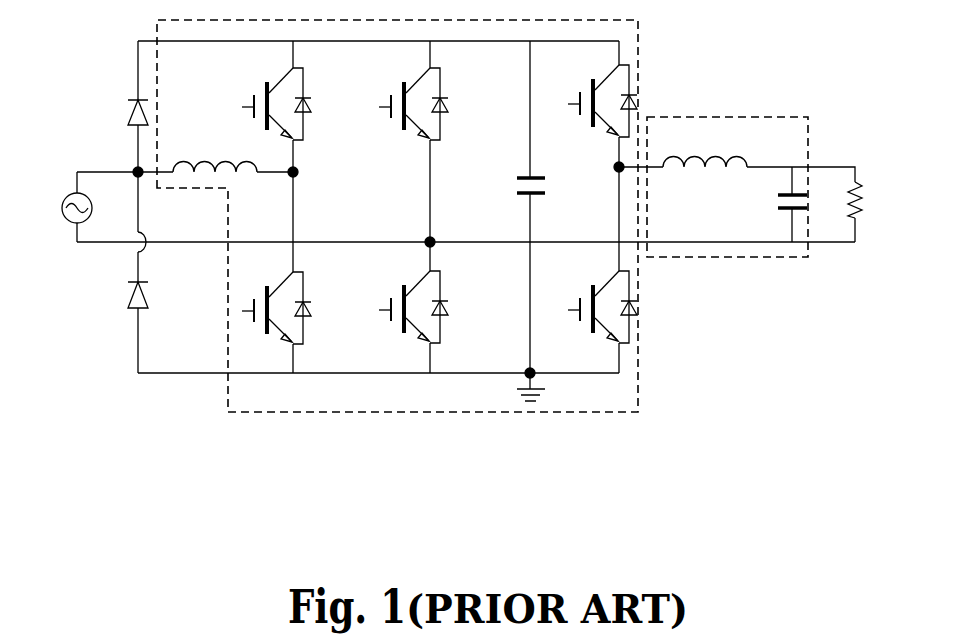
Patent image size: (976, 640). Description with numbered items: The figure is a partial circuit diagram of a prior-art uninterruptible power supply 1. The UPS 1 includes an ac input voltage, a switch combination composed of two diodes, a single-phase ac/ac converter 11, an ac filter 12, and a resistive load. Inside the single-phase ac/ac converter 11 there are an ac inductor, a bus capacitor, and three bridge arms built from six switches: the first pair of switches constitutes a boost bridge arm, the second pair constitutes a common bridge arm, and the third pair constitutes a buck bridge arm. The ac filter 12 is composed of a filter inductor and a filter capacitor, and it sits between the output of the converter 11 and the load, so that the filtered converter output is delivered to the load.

The uninterruptible power supply 1 is at (457, 258).
The single-phase ac/ac converter 11 is at (598, 412).
The ac filter 12 is at (725, 257).